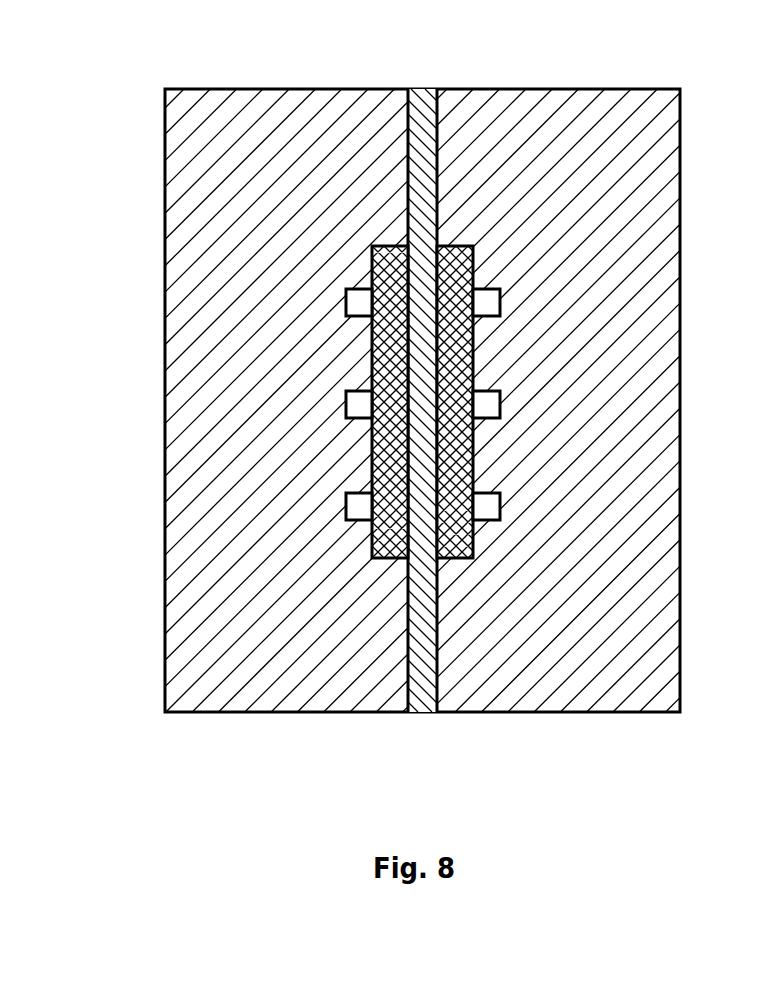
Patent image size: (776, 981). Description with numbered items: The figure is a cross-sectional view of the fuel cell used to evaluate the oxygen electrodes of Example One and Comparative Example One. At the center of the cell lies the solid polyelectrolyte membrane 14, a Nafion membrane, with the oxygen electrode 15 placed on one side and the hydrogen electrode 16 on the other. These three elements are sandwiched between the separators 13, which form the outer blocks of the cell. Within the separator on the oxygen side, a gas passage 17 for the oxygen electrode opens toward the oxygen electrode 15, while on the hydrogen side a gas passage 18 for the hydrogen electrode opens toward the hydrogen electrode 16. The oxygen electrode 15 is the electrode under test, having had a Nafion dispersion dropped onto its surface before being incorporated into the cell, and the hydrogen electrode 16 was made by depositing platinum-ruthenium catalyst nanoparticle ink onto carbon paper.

The separator 13 is at (260, 102).
The solid polyelectrolyte membrane 14 is at (418, 85).
The oxygen electrode 15 is at (370, 243).
The hydrogen electrode 16 is at (480, 242).
The gas passage for the oxygen electrode 17 is at (340, 388).
The gas passage for the hydrogen electrode 18 is at (507, 390).